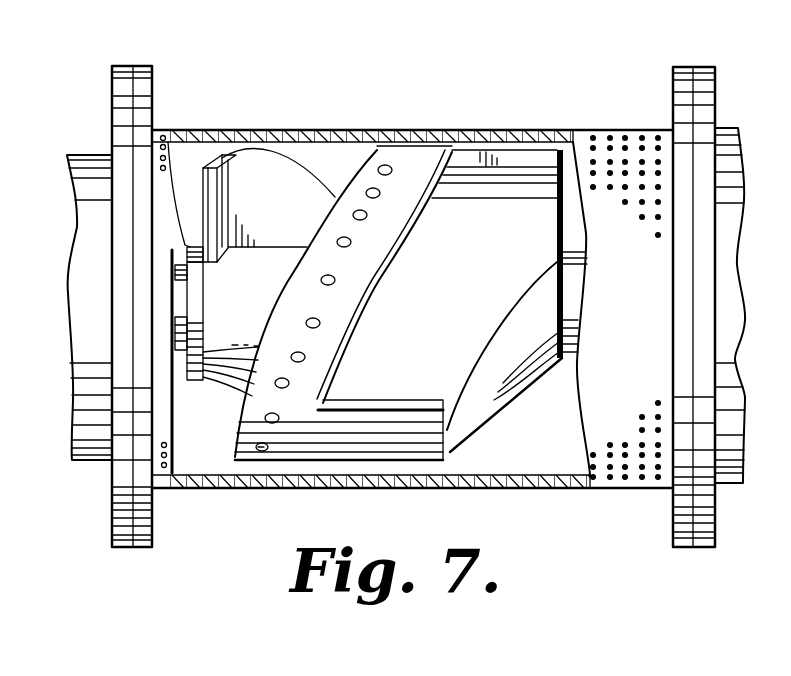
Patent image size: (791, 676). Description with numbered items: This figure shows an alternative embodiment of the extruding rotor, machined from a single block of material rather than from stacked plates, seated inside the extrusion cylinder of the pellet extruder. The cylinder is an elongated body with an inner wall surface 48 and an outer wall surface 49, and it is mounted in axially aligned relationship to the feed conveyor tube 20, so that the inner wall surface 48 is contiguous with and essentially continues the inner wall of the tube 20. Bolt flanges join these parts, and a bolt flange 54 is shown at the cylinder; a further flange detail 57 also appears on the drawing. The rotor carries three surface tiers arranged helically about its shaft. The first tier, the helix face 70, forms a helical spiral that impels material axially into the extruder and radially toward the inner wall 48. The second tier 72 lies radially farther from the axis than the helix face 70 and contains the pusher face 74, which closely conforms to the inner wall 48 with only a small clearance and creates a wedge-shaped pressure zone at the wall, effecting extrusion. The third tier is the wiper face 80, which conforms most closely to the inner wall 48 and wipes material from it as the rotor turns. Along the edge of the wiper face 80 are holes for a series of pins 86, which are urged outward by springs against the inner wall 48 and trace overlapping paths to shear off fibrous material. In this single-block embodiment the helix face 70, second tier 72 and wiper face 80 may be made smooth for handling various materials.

The feed conveyor tube 20 is at (76, 249).
The inner wall surface 48 is at (303, 144).
The outer wall surface 49 is at (334, 132).
The bolt flange 54 is at (676, 67).
The flange ring 57 is at (700, 547).
The helix face 70 is at (511, 380).
The second tier 72 is at (520, 195).
The pusher face 74 is at (512, 146).
The wiper face 80 is at (218, 168).
The pins 86 is at (321, 281).